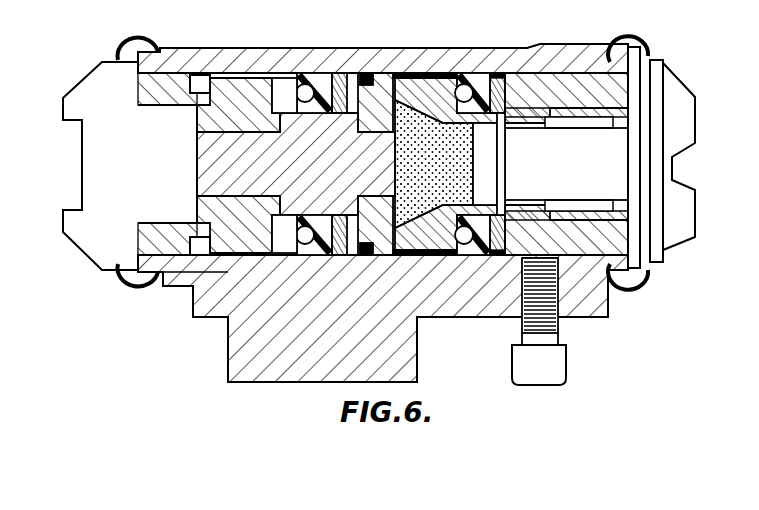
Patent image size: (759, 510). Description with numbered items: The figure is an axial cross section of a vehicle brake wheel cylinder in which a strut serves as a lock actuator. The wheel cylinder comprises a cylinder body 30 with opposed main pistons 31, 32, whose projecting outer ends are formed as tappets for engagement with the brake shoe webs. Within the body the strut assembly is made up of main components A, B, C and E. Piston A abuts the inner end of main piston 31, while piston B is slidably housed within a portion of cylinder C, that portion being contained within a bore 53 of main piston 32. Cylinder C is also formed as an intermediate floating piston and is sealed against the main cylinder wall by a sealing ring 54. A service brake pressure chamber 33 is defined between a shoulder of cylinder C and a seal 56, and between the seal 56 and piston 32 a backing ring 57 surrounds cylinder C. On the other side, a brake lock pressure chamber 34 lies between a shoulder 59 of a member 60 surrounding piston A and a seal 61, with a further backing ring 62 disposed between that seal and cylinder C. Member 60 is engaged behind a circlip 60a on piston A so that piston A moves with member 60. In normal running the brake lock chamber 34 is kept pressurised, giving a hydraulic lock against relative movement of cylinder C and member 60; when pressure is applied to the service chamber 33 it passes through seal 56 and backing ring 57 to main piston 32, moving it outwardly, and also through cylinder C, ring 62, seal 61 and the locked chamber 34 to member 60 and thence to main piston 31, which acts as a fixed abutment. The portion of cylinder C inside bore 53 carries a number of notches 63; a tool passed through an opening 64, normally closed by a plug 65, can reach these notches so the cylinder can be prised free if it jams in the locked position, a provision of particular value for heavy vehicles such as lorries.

The cylinder body 30 is at (313, 58).
The main piston 31 is at (100, 202).
The main piston 32 is at (648, 100).
The service brake pressure chamber 33 is at (452, 76).
The brake lock pressure chamber 34 is at (283, 95).
The bore 53 is at (585, 110).
The sealing ring 54 is at (370, 78).
The seal 56 is at (480, 76).
The backing ring 57 is at (510, 233).
The shoulder 59 is at (226, 268).
The member 60 is at (232, 92).
The circlip 60a is at (197, 202).
The seal 61 is at (303, 258).
The backing ring 62 is at (367, 255).
The notches 63 is at (580, 213).
The opening 64 is at (552, 258).
The plug 65 is at (523, 328).
The piston A is at (243, 170).
The piston B is at (488, 182).
The cylinder C is at (433, 92).
The strut component E is at (467, 148).